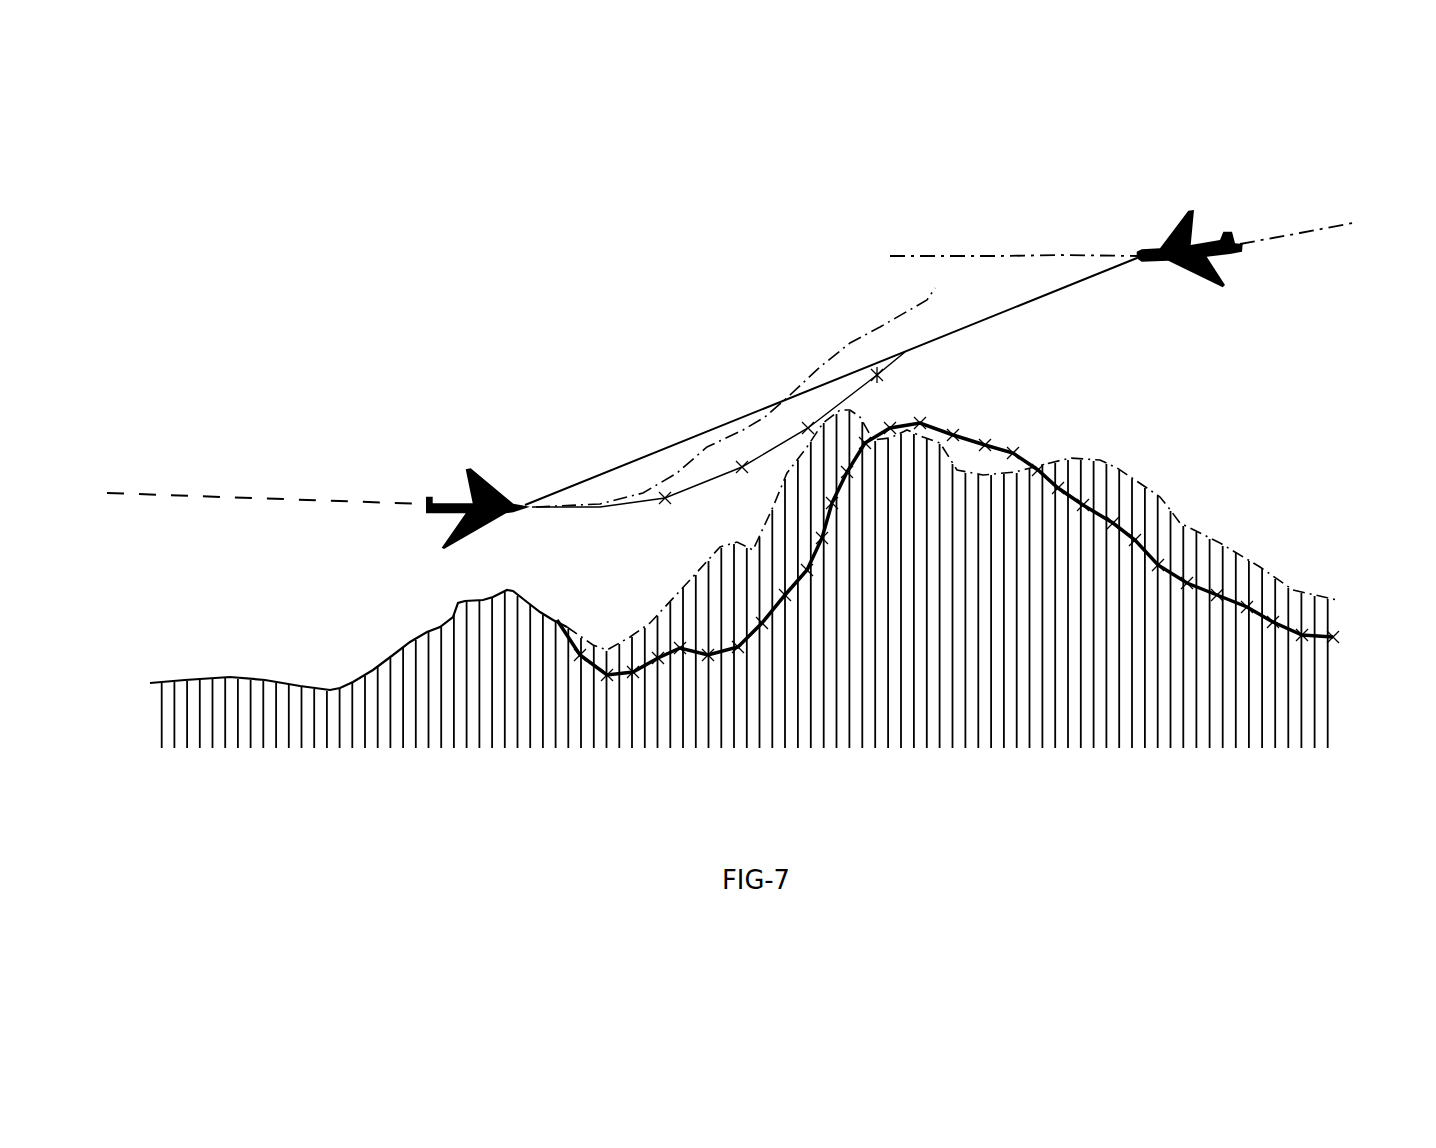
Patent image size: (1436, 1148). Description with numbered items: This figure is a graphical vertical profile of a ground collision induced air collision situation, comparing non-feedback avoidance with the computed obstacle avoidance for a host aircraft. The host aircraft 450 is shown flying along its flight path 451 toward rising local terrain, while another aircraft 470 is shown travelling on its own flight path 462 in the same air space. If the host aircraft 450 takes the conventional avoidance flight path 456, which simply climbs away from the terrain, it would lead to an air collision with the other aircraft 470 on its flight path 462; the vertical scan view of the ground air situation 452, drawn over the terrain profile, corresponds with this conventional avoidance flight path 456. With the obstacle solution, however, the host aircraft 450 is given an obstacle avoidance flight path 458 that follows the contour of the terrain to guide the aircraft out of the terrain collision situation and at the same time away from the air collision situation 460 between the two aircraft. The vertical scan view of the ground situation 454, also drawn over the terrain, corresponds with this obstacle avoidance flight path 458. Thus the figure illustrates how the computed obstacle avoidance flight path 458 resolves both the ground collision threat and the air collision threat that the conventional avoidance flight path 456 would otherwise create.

The host aircraft 450 is at (473, 497).
The flight path 451 is at (285, 502).
The vertical scan view of ground air situation 452 is at (1147, 488).
The vertical scan view of ground situation 454 is at (1123, 535).
The conventional avoidance flight path 456 is at (623, 500).
The obstacle avoidance flight path 458 is at (858, 394).
The air collision situation 460 is at (1082, 284).
The flight path of another aircraft 462 is at (970, 255).
The another aircraft 470 is at (1165, 235).